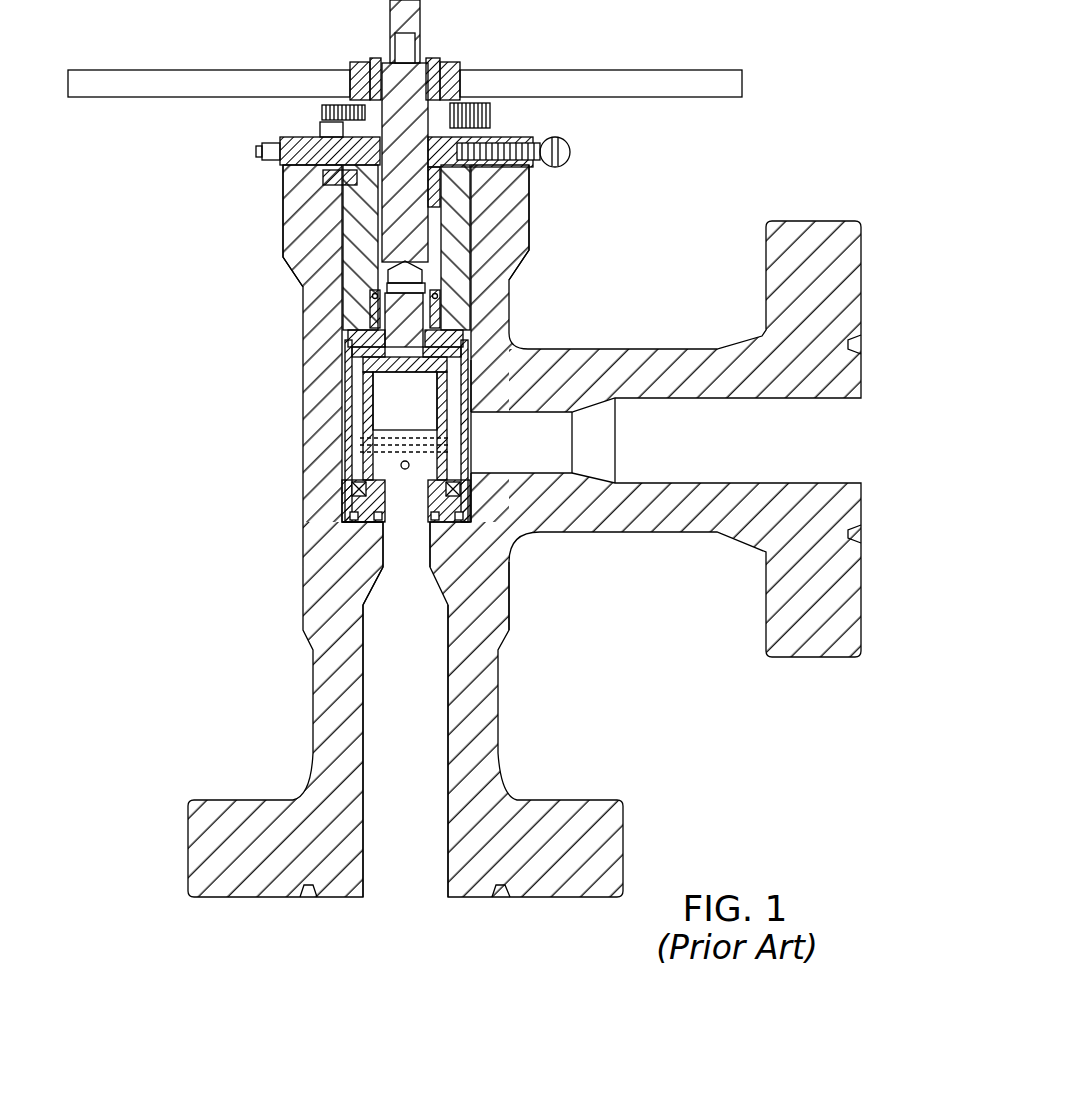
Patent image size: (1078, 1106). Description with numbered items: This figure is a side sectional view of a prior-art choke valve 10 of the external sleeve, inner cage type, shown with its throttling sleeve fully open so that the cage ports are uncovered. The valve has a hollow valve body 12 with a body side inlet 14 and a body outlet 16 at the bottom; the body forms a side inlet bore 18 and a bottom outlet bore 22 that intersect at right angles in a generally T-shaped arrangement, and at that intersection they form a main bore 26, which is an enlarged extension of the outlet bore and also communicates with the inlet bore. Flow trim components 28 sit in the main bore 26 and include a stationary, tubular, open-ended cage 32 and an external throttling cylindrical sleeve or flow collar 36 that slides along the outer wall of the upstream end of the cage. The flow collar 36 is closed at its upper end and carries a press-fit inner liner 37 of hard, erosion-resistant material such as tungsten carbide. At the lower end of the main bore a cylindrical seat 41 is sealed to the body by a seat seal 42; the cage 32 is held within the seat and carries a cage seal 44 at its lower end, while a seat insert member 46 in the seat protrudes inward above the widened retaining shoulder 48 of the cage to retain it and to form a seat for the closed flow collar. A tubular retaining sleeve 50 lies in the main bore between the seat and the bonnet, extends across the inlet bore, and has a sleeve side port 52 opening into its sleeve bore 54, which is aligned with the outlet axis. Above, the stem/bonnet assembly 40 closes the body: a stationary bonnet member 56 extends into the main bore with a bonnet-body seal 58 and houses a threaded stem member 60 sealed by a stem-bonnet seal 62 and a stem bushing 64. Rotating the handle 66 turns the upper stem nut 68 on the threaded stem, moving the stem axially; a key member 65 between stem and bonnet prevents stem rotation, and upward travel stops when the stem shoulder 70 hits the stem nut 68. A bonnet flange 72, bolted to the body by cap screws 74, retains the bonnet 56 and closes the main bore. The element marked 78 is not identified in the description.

The choke valve 10 is at (645, 248).
The hollow valve body 12 is at (500, 731).
The body side inlet 14 is at (822, 482).
The body outlet 16 is at (365, 822).
The side inlet bore 18 is at (650, 482).
The bottom outlet bore 22 is at (365, 676).
The main bore 26 is at (472, 350).
The flow trim components 28 is at (460, 424).
The stationary cage component 32 is at (510, 560).
The external throttling cylindrical sleeve (flow collar) 36 is at (472, 395).
The inner liner 37 is at (374, 410).
The stem/bonnet assembly 40 is at (478, 249).
The cylindrical seat 41 is at (363, 493).
The seat seal 42 is at (340, 526).
The cage seal 44 is at (375, 556).
The seat insert member 46 is at (345, 483).
The widened retaining shoulder 48 is at (372, 514).
The tubular retaining sleeve 50 is at (345, 422).
The sleeve side port 52 is at (465, 462).
The sleeve bore 54 is at (345, 373).
The bonnet member 56 is at (355, 258).
The bonnet-body seal 58 is at (345, 292).
The threaded stem member 60 is at (468, 105).
The stem-bonnet seal 62 is at (470, 295).
The stem bushing 64 is at (445, 328).
The key member 65 is at (437, 200).
The handle 66 is at (543, 72).
The upper stem nut 68 is at (352, 146).
The stem shoulder 70 is at (357, 180).
The bonnet flange 72 is at (285, 168).
The cap screws 74 is at (323, 105).
The seat orifice 78 is at (430, 534).